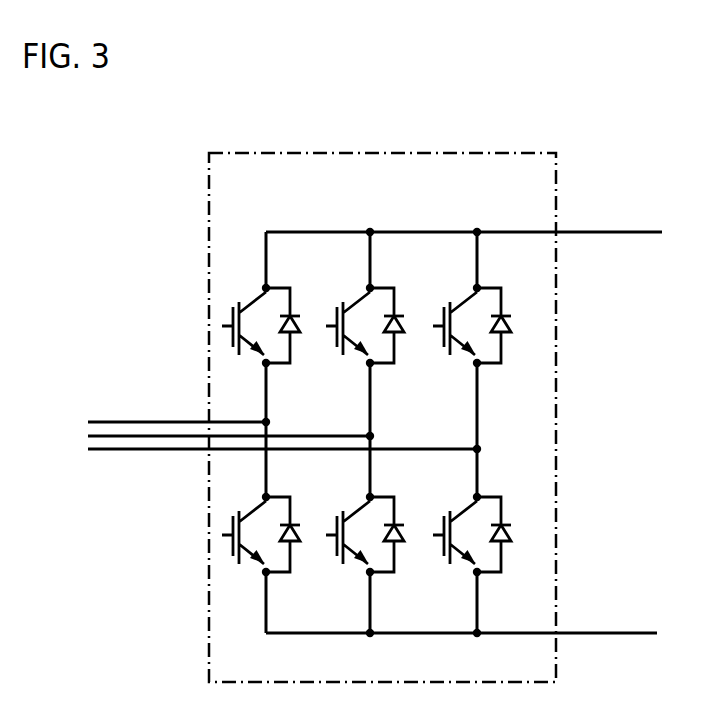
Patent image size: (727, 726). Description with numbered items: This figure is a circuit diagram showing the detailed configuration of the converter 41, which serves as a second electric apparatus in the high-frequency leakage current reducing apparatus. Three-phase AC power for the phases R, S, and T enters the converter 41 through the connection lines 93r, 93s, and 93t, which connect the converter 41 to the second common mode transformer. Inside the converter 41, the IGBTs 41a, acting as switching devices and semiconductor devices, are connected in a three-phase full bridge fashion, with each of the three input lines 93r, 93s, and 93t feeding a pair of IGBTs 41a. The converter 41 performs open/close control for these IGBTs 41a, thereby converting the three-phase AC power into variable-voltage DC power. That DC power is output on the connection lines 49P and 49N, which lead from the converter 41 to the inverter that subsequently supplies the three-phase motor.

The converter 41 is at (557, 195).
The IGBTs 41a is at (247, 293).
The connection line 49P is at (630, 233).
The connection line 49N is at (618, 632).
The connection line 93r is at (121, 420).
The connection line 93s is at (170, 434).
The connection line 93t is at (148, 451).